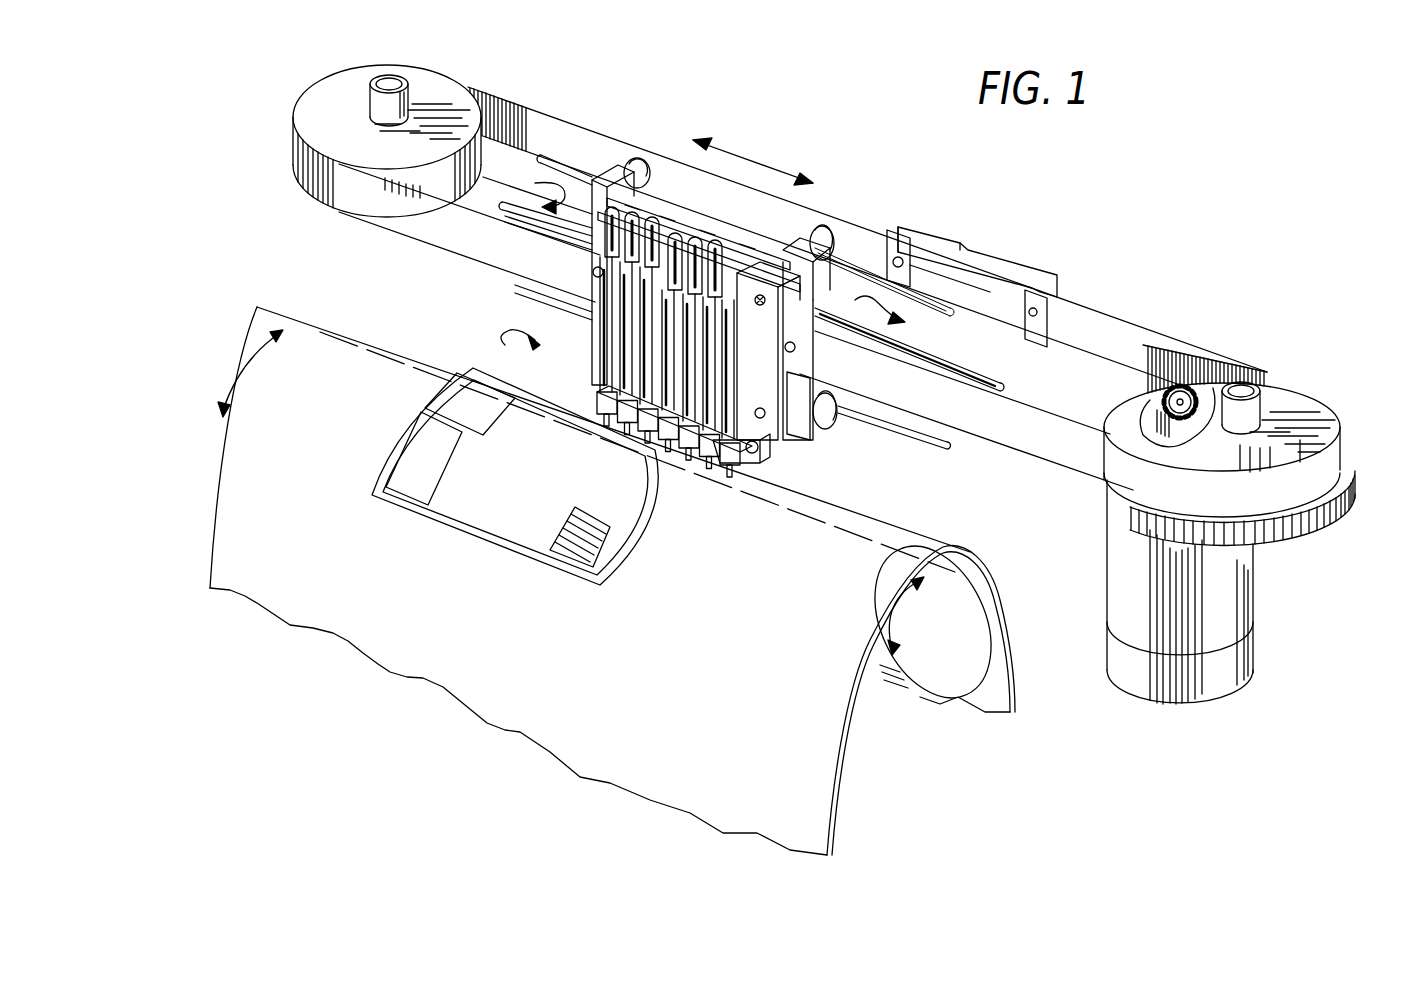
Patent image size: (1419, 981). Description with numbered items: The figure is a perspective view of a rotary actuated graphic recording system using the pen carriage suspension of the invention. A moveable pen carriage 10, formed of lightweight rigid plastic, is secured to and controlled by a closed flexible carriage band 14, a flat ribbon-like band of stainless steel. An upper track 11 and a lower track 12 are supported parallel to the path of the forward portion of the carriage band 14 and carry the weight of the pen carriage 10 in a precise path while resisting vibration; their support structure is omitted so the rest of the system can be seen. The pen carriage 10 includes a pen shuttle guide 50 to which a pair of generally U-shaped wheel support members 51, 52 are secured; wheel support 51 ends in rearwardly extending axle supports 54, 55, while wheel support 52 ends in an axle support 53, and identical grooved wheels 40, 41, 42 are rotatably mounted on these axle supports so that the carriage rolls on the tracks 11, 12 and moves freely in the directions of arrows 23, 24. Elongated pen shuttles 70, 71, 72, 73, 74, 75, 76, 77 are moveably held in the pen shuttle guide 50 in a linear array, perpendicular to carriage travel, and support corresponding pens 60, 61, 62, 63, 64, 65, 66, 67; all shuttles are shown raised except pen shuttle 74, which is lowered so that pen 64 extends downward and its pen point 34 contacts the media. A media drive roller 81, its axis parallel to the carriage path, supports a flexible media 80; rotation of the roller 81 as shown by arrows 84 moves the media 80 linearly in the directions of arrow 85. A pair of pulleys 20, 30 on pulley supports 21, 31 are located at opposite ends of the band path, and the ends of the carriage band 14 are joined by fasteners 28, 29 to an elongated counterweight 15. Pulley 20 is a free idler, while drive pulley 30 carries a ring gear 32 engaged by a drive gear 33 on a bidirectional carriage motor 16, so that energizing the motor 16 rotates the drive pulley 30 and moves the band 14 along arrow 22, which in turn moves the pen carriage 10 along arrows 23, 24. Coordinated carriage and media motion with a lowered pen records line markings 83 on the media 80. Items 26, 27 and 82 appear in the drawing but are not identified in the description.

The pen carriage 10 is at (520, 335).
The upper track 11 is at (864, 285).
The lower track 12 is at (925, 440).
The carriage band 14 is at (1128, 336).
The counterweight 15 is at (1003, 238).
The carriage motor 16 is at (1233, 598).
The idler pulley 20 is at (318, 96).
The pulley support 21 is at (408, 98).
The arrow 22 is at (770, 158).
The arrow 23 is at (899, 315).
The arrow 24 is at (537, 193).
The screw 26 is at (797, 350).
The screw 27 is at (592, 272).
The fastener 28 is at (903, 263).
The fastener 29 is at (1040, 310).
The drive pulley 30 is at (1236, 444).
The pulley support 31 is at (1258, 398).
The ring gear 32 is at (1352, 478).
The drive gear 33 is at (1195, 388).
The pen point 34 is at (700, 462).
The grooved wheel 40 is at (640, 163).
The grooved wheel 41 is at (835, 256).
The grooved wheel 42 is at (832, 426).
The pen shuttle guide 50 is at (826, 230).
The wheel support member 51 is at (785, 440).
The wheel support member 52 is at (590, 175).
The axle support 53 is at (608, 175).
The axle support 54 is at (838, 248).
The axle support 55 is at (835, 395).
The pen 60 is at (610, 378).
The pen 61 is at (600, 405).
The pen 62 is at (620, 412).
The pen 63 is at (640, 420).
The pen 64 is at (660, 430).
The pen 65 is at (680, 438).
The pen 66 is at (718, 450).
The pen 67 is at (738, 458).
The pen shuttle 70 is at (618, 207).
The pen shuttle 71 is at (638, 212).
The pen shuttle 72 is at (658, 217).
The pen shuttle 73 is at (680, 233).
The pen shuttle 74 is at (700, 237).
The pen shuttle 75 is at (720, 240).
The pen shuttle 76 is at (800, 242).
The pen shuttle 77 is at (766, 300).
The flexible media 80 is at (810, 760).
The media drive roller 81 is at (972, 605).
The label 82 is at (612, 552).
The line markings 83 is at (400, 425).
The arrows 84 is at (905, 605).
The arrow 85 is at (242, 375).